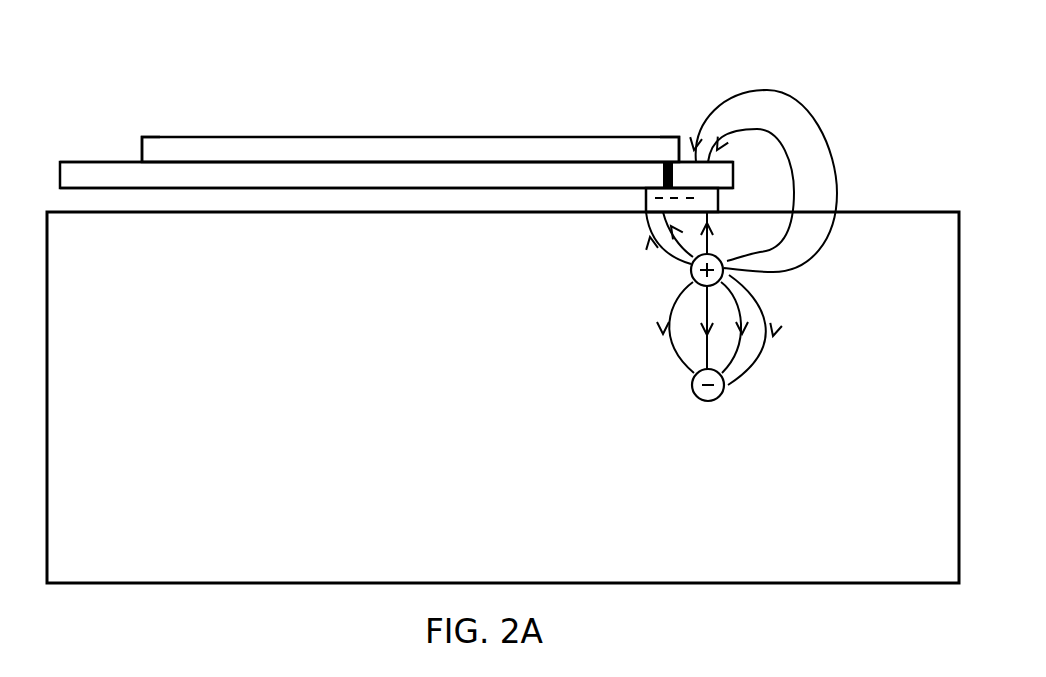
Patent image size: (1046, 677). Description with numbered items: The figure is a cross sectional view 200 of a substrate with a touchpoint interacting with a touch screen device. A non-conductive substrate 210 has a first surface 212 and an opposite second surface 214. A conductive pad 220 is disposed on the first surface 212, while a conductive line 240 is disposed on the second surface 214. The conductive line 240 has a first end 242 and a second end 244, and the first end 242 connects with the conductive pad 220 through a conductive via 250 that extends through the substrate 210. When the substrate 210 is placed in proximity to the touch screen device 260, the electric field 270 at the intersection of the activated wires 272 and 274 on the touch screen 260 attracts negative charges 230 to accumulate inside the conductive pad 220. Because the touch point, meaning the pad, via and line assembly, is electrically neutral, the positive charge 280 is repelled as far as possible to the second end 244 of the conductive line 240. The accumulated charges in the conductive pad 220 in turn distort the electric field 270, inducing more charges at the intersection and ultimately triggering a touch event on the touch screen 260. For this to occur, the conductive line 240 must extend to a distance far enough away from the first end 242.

The cross sectional view 200 is at (160, 33).
The non-conductive substrate 210 is at (90, 177).
The first surface 212 is at (114, 189).
The second surface 214 is at (115, 160).
The conductive pad 220 is at (648, 197).
The negative charges 230 is at (650, 200).
The conductive line 240 is at (447, 150).
The first end 242 is at (673, 137).
The second end 244 is at (162, 135).
The conductive via 250 is at (660, 175).
The touch screen device 260 is at (925, 211).
The electric field 270 is at (628, 345).
The activated wire 272 is at (690, 272).
The activated wire 274 is at (692, 390).
The positive charge 280 is at (203, 143).